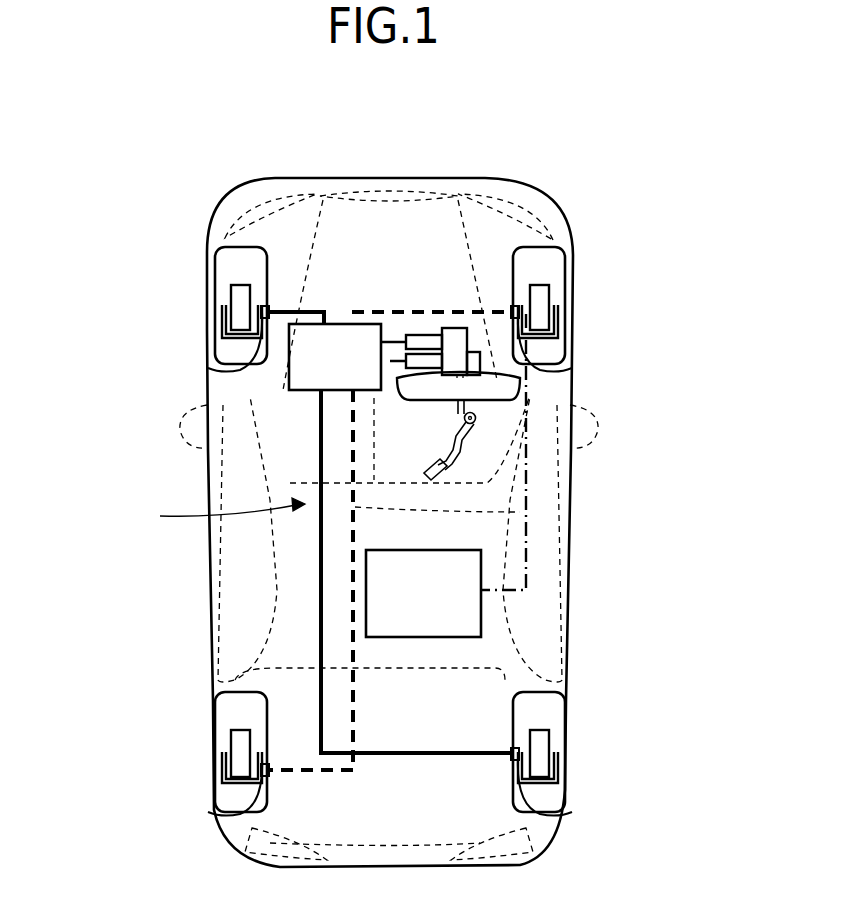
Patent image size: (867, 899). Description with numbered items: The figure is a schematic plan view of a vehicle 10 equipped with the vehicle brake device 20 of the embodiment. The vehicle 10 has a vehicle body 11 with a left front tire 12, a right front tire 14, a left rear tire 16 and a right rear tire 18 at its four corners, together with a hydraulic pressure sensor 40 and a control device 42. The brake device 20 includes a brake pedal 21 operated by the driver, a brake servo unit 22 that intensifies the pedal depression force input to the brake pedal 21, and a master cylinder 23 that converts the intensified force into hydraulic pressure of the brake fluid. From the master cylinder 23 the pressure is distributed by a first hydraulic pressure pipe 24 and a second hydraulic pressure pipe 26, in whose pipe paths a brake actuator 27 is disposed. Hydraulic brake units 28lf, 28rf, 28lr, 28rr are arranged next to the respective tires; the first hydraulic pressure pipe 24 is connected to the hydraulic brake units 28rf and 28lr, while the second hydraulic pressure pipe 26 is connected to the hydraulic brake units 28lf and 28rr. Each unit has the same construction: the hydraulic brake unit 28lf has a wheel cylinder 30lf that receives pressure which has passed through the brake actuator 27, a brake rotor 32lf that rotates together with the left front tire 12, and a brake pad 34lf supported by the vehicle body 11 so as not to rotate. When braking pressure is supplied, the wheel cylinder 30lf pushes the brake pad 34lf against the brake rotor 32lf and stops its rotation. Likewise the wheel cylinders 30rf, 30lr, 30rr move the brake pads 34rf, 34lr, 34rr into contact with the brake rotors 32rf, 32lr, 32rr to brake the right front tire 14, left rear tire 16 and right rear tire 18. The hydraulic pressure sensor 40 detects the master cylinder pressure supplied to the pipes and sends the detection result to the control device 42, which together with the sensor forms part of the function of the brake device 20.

The vehicle 10 is at (198, 148).
The vehicle body 11 is at (500, 180).
The left front tire 12 is at (235, 264).
The right front tire 14 is at (548, 264).
The left rear tire 16 is at (235, 706).
The right rear tire 18 is at (548, 706).
The vehicle brake device 20 is at (218, 514).
The brake pedal 21 is at (470, 440).
The brake servo unit 22 is at (510, 395).
The master cylinder 23 is at (452, 333).
The first hydraulic pressure pipe 24 is at (530, 517).
The second hydraulic pressure pipe 26 is at (320, 455).
The brake actuator 27 is at (337, 324).
The hydraulic brake unit 28lf is at (110, 287).
The hydraulic brake unit 28rf is at (672, 287).
The hydraulic brake unit 28lr is at (110, 727).
The hydraulic brake unit 28rr is at (672, 727).
The wheel cylinder 30lf is at (208, 368).
The wheel cylinder 30rf is at (572, 368).
The wheel cylinder 30lr is at (208, 812).
The wheel cylinder 30rr is at (572, 812).
The brake rotor 32lf is at (230, 298).
The brake rotor 32rf is at (550, 298).
The brake rotor 32lr is at (230, 740).
The brake rotor 32rr is at (550, 740).
The brake pad 34lf is at (225, 325).
The brake pad 34rf is at (555, 325).
The brake pad 34lr is at (225, 768).
The brake pad 34rr is at (555, 768).
The hydraulic pressure sensor 40 is at (473, 352).
The control device 42 is at (481, 612).